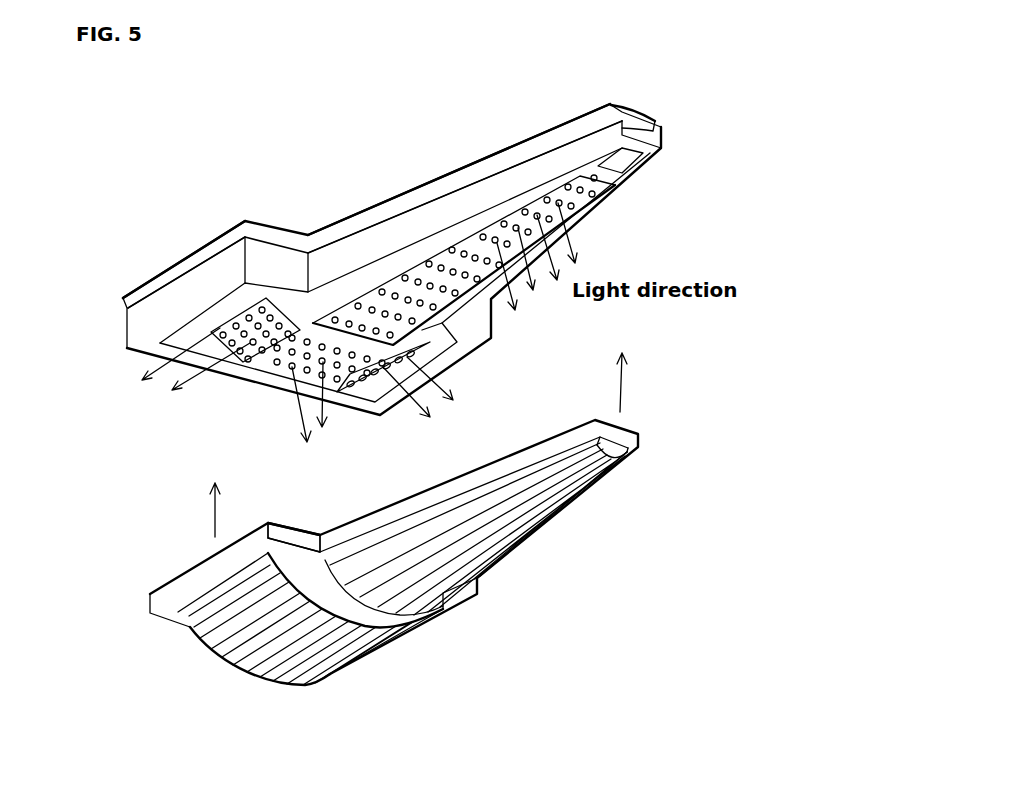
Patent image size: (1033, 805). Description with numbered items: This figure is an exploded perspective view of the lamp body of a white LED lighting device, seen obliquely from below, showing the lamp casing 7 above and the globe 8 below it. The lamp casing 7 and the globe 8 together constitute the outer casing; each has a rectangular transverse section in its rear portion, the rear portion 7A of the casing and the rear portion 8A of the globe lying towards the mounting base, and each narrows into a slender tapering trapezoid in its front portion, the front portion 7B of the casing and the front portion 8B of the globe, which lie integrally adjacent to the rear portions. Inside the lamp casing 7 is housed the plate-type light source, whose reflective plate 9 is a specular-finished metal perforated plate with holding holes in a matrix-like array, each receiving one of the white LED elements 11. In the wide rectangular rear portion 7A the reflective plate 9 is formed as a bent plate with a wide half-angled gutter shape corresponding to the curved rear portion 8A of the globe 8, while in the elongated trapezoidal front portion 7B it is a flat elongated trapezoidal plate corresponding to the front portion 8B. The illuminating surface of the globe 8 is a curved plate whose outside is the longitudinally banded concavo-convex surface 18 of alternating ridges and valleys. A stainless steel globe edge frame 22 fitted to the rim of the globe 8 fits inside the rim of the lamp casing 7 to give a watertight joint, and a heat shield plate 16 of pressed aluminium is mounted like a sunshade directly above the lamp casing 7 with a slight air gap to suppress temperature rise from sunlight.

The lamp casing 7 is at (211, 273).
The rear portion of lamp casing 7A is at (157, 310).
The front portion of lamp casing 7B is at (388, 233).
The reflective plate 9 is at (596, 186).
The white LED elements 11 is at (358, 303).
The heat shield plate 16 is at (660, 123).
The globe 8 is at (417, 663).
The rear portion of globe 8A is at (320, 683).
The front portion of globe 8B is at (532, 520).
The concavo-convex surface 18 is at (453, 548).
The globe edge frame 22 is at (285, 536).